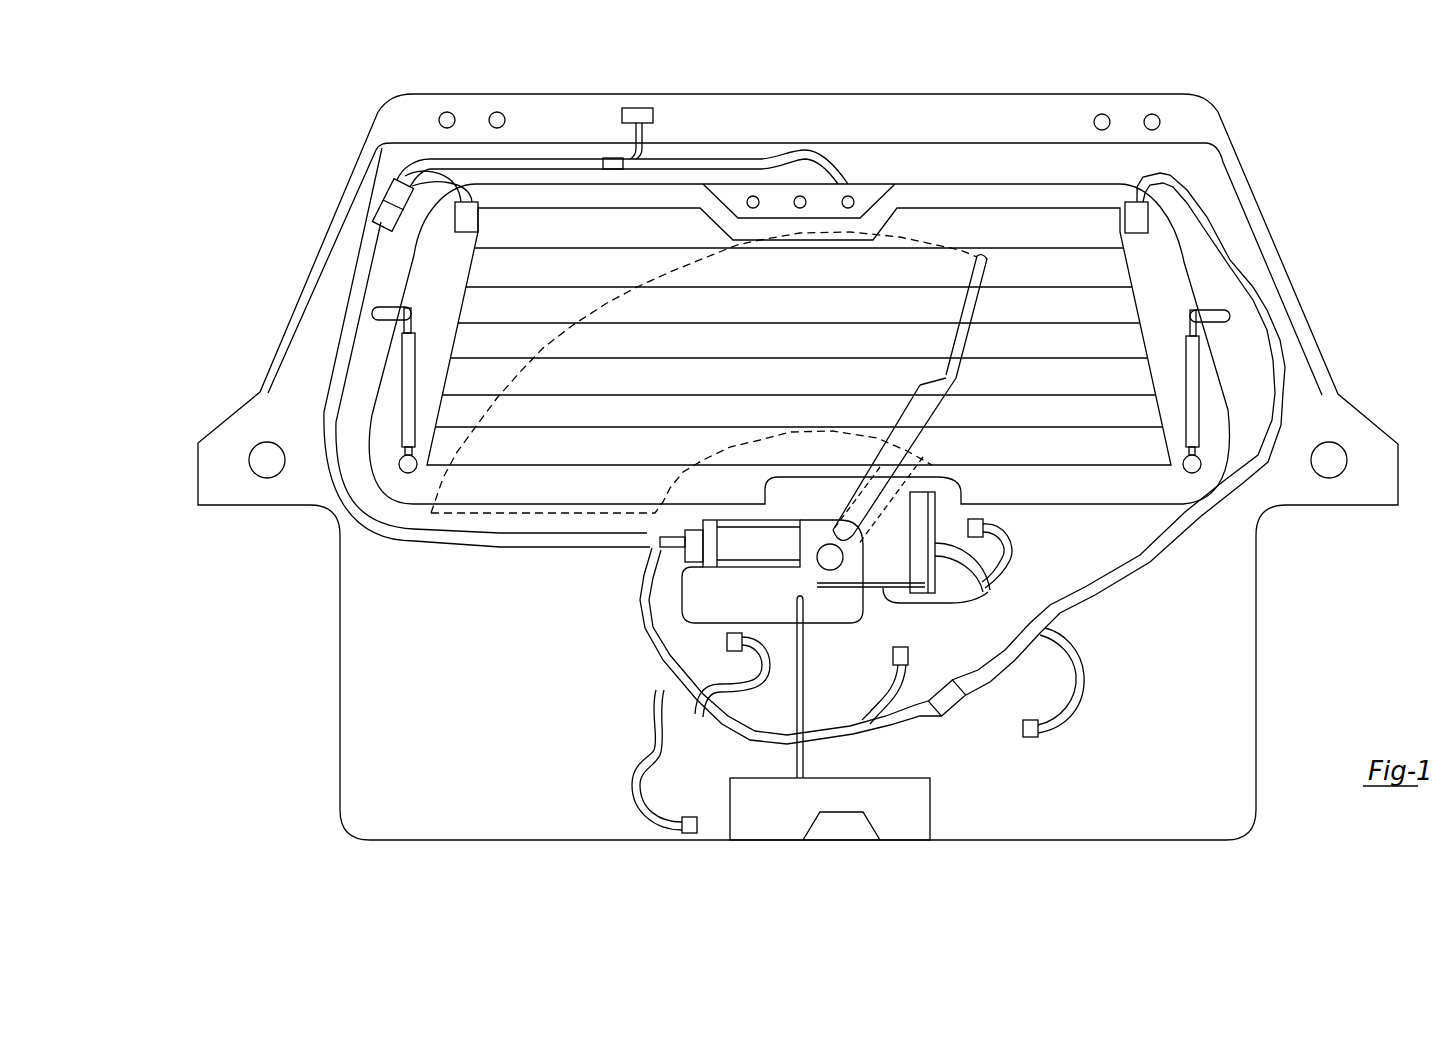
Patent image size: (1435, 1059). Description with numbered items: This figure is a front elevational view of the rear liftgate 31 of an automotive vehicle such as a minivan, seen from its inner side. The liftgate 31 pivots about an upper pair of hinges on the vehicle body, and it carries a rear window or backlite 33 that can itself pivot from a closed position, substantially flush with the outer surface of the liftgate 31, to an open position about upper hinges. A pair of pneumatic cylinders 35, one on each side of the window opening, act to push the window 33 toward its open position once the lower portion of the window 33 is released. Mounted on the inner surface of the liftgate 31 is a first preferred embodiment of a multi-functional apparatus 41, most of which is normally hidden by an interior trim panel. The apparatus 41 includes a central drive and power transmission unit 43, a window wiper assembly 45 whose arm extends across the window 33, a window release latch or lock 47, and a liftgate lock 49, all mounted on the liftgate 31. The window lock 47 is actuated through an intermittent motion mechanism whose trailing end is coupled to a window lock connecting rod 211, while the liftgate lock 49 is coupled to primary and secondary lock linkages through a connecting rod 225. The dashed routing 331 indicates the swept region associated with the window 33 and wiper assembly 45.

The liftgate 31 is at (463, 703).
The rear window or backlite 33 is at (577, 208).
The wiring harness routing 331 is at (443, 515).
The pneumatic cylinders 35 is at (410, 378).
The multi-functional apparatus 41 is at (596, 613).
The central drive and power transmission unit 43 is at (849, 648).
The window wiper assembly 45 is at (995, 343).
The window release latch or lock 47 is at (920, 507).
The liftgate lock 49 is at (893, 787).
The window lock connecting rod 211 is at (1010, 593).
The connecting rod 225 is at (800, 767).